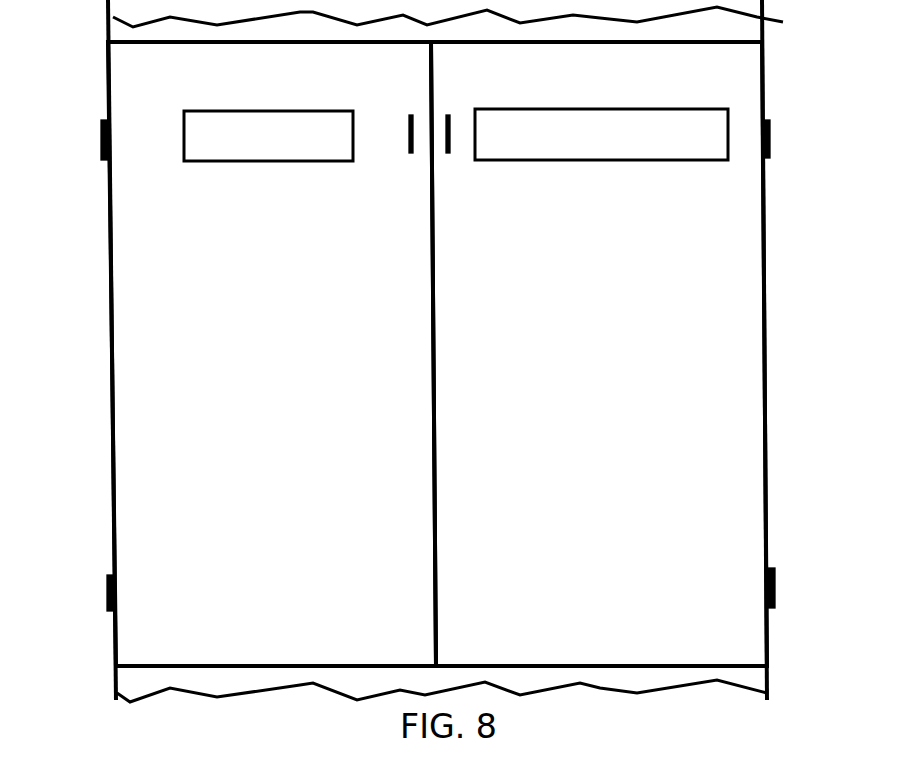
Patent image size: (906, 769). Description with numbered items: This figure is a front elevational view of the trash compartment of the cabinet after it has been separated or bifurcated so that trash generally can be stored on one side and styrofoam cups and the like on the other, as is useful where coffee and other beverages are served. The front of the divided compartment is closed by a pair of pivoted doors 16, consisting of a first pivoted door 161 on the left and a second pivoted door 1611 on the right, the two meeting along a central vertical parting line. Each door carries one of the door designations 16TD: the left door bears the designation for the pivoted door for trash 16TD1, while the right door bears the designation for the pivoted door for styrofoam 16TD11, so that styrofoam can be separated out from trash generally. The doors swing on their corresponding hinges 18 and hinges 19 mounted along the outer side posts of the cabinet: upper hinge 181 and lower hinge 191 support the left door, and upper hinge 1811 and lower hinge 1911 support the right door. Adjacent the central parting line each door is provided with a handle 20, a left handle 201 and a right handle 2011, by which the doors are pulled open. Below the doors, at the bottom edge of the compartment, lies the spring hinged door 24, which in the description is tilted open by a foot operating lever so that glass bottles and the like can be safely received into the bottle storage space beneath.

The pivoted doors 16 is at (437, 354).
The pivoted door 161 is at (279, 375).
The pivoted door 1611 is at (590, 369).
The door designations for trash and styrofoam 16TD is at (456, 174).
The pivoted door for trash 16TD1 is at (268, 167).
The pivoted door for styrofoam 16TD11 is at (610, 158).
The hinges 18 is at (447, 153).
The hinge 181 is at (96, 144).
The hinge 1811 is at (776, 143).
The hinges 19 is at (445, 594).
The hinge 191 is at (100, 600).
The hinge 1911 is at (783, 592).
The door handles 20 is at (437, 168).
The left door handle (20') 201 is at (404, 142).
The right door handle (20'') 2011 is at (452, 147).
The spring hinged door 24 is at (472, 664).